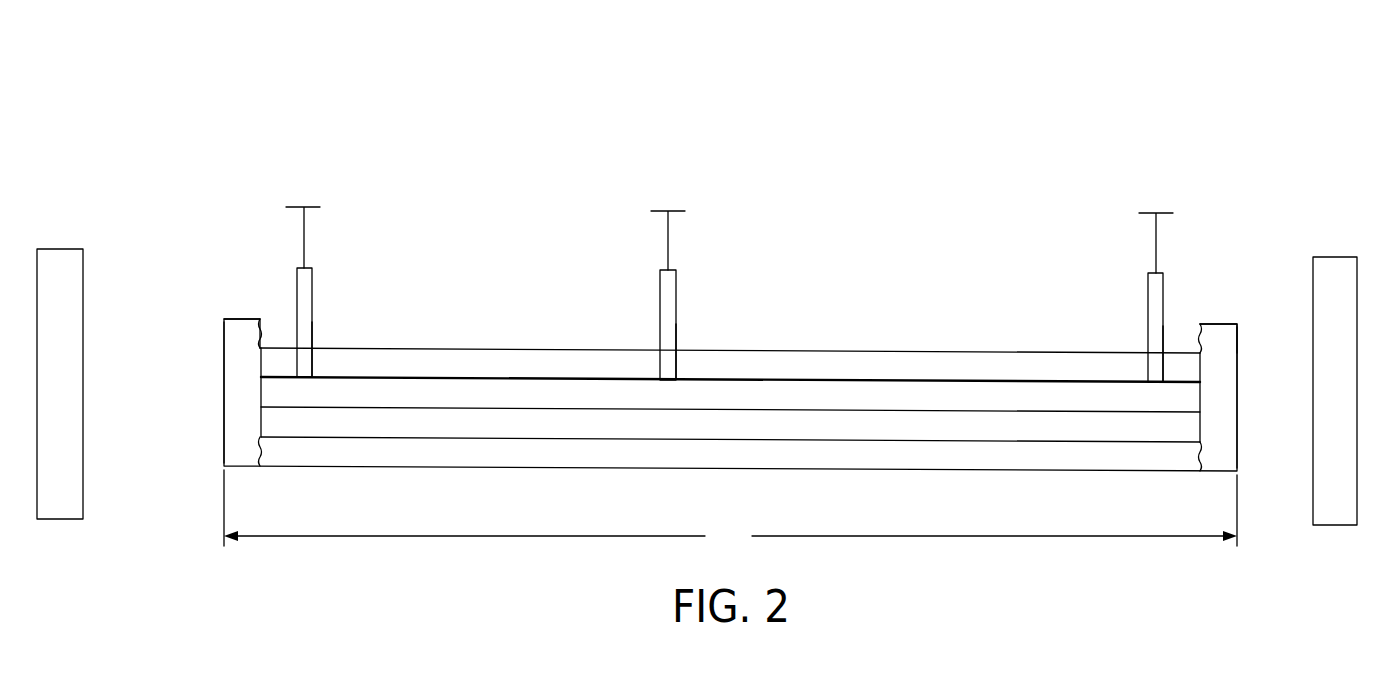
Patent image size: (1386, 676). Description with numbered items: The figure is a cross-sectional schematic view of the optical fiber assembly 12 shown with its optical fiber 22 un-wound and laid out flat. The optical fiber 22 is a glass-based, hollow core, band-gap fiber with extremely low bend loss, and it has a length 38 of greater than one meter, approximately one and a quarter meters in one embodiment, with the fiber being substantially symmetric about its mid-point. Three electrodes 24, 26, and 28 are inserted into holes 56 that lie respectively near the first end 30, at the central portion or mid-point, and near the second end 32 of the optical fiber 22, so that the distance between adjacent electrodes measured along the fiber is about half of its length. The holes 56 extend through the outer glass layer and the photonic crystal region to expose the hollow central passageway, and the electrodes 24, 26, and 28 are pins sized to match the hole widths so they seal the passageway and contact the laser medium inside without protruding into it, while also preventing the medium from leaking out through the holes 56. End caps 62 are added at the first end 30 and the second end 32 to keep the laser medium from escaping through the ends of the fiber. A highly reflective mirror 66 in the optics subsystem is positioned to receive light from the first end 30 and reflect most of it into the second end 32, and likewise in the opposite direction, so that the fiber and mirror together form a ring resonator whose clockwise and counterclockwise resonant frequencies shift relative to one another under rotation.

The optical fiber assembly 12 is at (793, 145).
The optical fiber 22 is at (497, 320).
The electrode 24 is at (1148, 281).
The electrode 26 is at (676, 291).
The electrode 28 is at (297, 293).
The first end 30 is at (1220, 292).
The second end 32 is at (208, 293).
The length 38 is at (730, 511).
The holes 56 is at (313, 334).
The end caps 62 is at (234, 392).
The highly reflective mirror 66 is at (60, 249).